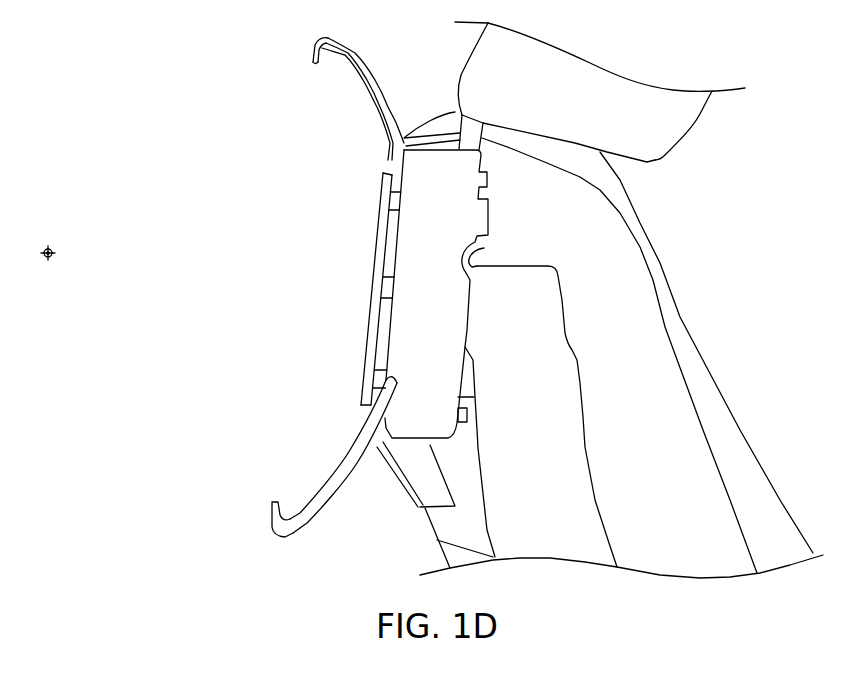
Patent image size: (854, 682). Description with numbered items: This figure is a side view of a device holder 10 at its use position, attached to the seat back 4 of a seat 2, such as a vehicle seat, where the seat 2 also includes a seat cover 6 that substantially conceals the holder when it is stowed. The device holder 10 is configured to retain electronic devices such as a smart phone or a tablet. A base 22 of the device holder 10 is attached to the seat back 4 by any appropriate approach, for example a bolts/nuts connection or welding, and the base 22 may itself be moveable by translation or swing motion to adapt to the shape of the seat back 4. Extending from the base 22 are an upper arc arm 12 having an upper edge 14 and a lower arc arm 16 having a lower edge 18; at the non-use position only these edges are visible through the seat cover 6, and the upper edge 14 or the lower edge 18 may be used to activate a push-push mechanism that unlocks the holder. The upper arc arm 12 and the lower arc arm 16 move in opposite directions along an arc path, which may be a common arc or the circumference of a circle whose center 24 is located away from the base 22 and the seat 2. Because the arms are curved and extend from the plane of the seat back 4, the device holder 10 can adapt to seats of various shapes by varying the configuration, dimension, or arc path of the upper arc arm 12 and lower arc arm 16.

The seat 2 is at (713, 180).
The seat back 4 is at (447, 525).
The seat cover 6 is at (372, 302).
The device holder 10 is at (415, 265).
The upper arc arm 12 is at (355, 87).
The upper edge 14 is at (315, 50).
The lower arc arm 16 is at (325, 505).
The lower edge 18 is at (283, 534).
The base 22 is at (437, 173).
The center 24 is at (46, 258).